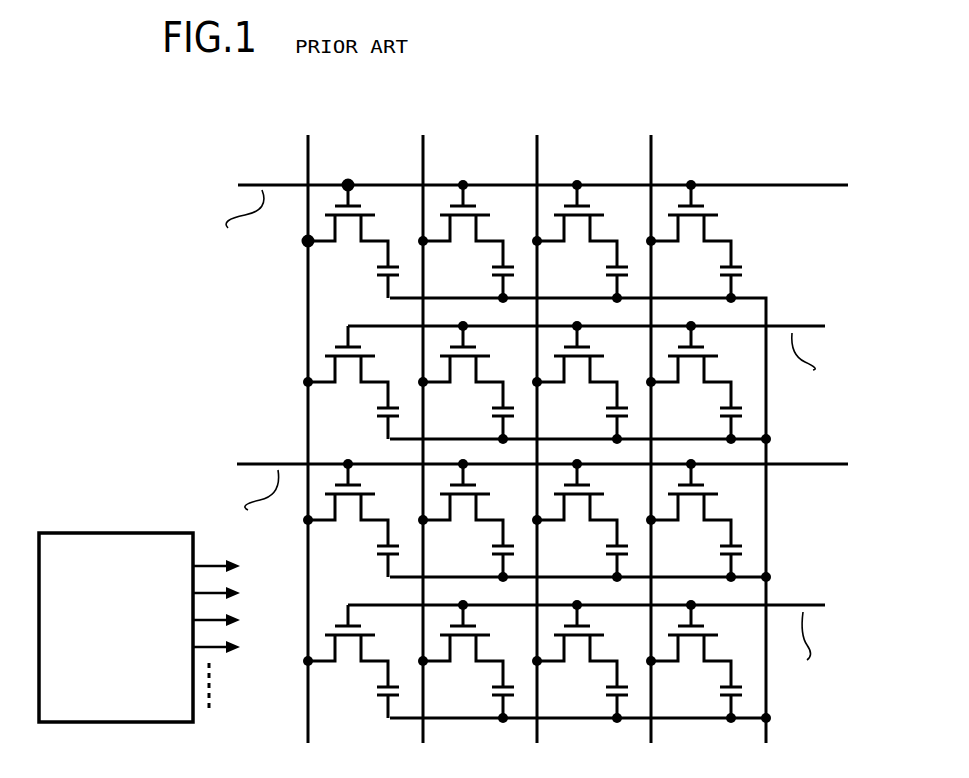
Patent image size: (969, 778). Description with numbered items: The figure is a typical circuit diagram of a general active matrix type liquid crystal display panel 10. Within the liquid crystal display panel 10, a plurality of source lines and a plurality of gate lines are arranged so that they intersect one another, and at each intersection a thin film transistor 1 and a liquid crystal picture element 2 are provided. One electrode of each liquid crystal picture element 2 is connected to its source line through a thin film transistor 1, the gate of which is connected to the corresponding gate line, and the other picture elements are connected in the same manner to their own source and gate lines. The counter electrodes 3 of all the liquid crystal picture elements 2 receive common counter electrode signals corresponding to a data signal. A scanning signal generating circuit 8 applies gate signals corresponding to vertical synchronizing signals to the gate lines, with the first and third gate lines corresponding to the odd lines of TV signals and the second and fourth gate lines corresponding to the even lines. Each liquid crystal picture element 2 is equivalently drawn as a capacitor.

The liquid crystal display panel 10 is at (256, 136).
The thin film transistor 1 is at (368, 199).
The liquid crystal picture element 2 is at (372, 272).
The counter electrode 3 is at (398, 300).
The scanning signal generating circuit 8 is at (120, 533).